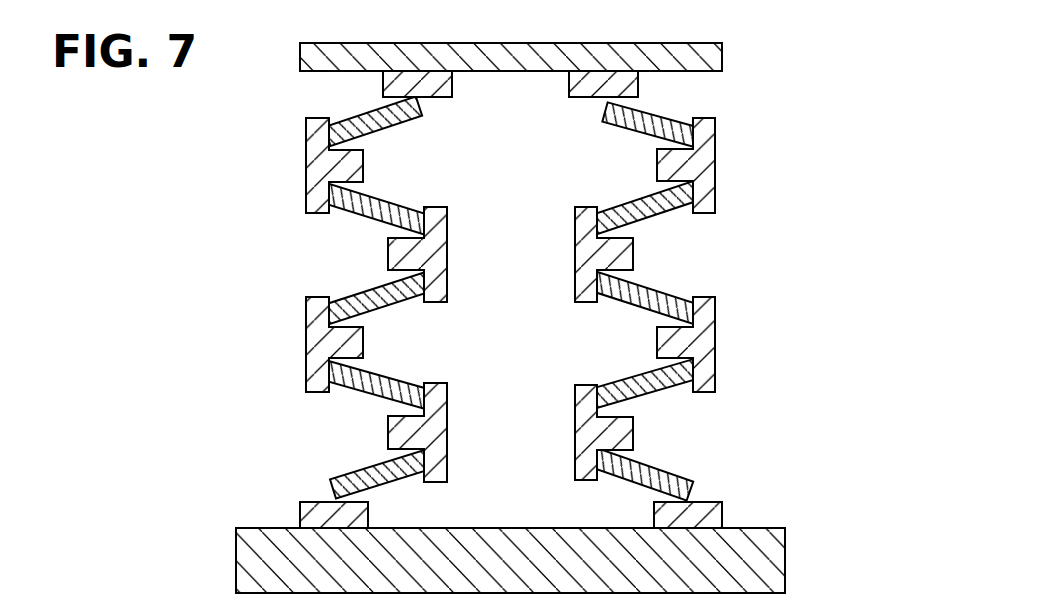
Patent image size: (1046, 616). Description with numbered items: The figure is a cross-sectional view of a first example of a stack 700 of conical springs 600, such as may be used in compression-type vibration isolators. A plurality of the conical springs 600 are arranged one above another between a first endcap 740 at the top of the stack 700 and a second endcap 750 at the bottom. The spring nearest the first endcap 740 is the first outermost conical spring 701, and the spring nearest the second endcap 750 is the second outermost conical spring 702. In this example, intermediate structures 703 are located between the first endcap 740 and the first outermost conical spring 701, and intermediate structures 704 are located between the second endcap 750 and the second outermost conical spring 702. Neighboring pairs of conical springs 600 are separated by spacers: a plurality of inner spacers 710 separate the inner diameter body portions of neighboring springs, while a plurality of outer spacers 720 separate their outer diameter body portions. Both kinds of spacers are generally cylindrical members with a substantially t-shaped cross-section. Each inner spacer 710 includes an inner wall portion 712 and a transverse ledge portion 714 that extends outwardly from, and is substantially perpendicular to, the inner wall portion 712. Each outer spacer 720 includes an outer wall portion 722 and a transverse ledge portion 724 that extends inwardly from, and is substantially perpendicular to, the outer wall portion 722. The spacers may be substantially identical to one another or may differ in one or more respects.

The stack of conical springs 700 is at (813, 262).
The first endcap 740 is at (667, 52).
The second endcap 750 is at (762, 562).
The conical spring 600 is at (673, 130).
The intermediate structure 703 is at (443, 103).
The first outermost conical spring 701 is at (650, 110).
The intermediate structure 704 is at (305, 512).
The second outermost conical spring 702 is at (683, 483).
The outer spacer 720 is at (313, 270).
The outer wall portion 722 is at (310, 188).
The transverse ledge portion 724 is at (352, 168).
The inner spacer 710 is at (450, 307).
The inner wall portion 712 is at (609, 343).
The transverse ledge portion 714 is at (628, 255).